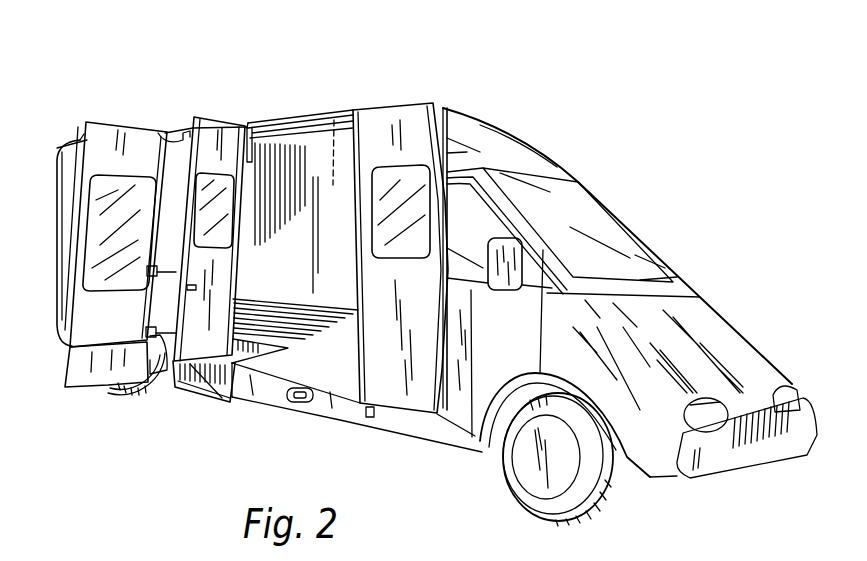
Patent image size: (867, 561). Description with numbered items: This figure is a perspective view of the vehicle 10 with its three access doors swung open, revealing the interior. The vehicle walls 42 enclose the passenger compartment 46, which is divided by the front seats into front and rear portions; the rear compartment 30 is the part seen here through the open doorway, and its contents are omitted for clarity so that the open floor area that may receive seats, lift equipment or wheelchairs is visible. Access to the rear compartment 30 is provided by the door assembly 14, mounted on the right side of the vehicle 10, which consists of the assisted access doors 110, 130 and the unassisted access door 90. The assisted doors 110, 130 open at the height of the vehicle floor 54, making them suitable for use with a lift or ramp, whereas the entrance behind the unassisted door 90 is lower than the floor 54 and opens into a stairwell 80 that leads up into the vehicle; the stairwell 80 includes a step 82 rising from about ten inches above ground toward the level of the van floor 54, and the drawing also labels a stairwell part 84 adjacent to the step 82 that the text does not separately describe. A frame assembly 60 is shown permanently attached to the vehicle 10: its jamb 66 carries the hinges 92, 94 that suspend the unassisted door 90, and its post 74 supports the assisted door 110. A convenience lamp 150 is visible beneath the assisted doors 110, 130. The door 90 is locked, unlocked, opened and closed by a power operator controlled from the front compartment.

The vehicle 10 is at (572, 68).
The door assembly 14 is at (418, 129).
The rear compartment 30 is at (288, 112).
The vehicle walls 42 is at (65, 168).
The passenger compartment 46 is at (335, 138).
The vehicle floor 54 is at (288, 348).
The frame assembly 60 is at (321, 116).
The jamb 66 is at (163, 139).
The post 74 is at (237, 265).
The stairwell 80 is at (233, 403).
The step 82 is at (187, 393).
The step support 84 is at (198, 384).
The unassisted access door 90 is at (97, 128).
The hinge 92 is at (156, 326).
The hinge 94 is at (152, 283).
The assisted access door 110 is at (212, 100).
The assisted access door 130 is at (383, 113).
The convenience lamp 150 is at (300, 402).